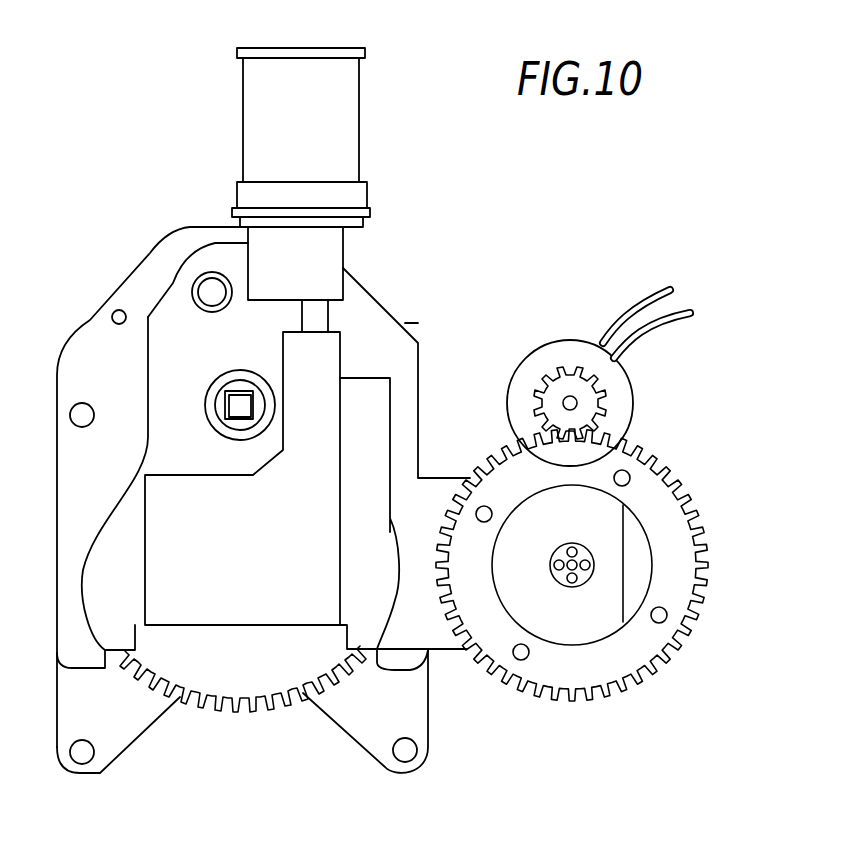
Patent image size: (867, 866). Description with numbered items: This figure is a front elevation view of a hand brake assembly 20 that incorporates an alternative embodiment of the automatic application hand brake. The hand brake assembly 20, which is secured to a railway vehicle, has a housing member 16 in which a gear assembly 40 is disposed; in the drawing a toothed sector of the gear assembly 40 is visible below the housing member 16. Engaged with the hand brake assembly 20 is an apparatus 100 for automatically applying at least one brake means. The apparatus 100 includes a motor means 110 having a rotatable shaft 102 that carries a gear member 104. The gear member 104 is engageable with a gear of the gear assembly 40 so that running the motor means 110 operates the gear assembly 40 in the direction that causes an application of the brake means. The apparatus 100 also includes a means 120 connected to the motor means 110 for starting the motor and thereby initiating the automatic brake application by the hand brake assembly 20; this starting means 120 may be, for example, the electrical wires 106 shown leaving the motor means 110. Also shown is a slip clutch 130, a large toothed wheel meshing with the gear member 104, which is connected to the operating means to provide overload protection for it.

The housing member 16 is at (98, 330).
The hand brake assembly 20 is at (147, 240).
The gear assembly 40 is at (253, 718).
The apparatus 100 is at (458, 237).
The rotatable shaft 102 is at (563, 403).
The gear member 104 is at (552, 373).
The electrical wires 106 is at (667, 330).
The motor means 110 is at (640, 392).
The means for starting the motor 120 is at (518, 293).
The slip clutch 130 is at (697, 482).